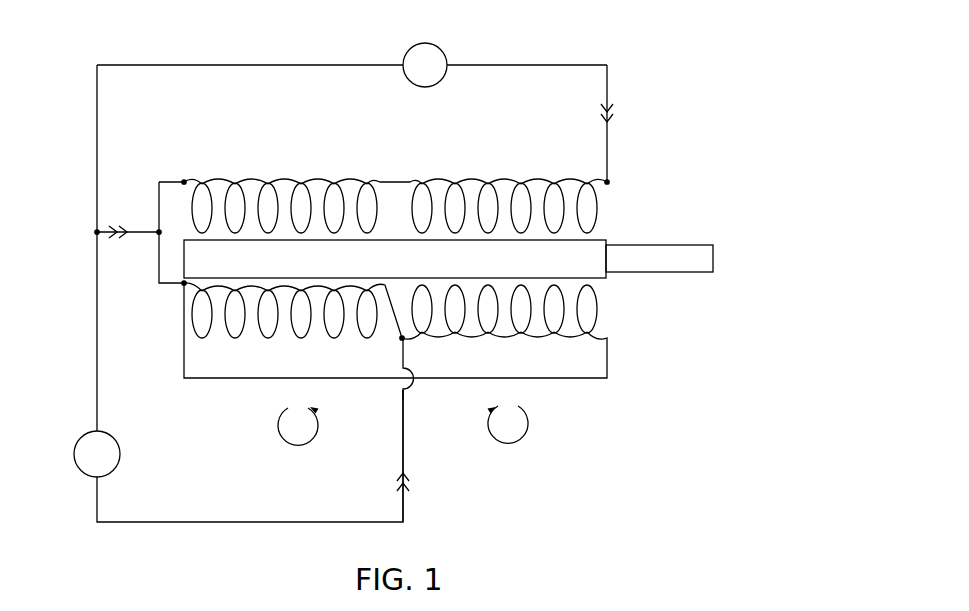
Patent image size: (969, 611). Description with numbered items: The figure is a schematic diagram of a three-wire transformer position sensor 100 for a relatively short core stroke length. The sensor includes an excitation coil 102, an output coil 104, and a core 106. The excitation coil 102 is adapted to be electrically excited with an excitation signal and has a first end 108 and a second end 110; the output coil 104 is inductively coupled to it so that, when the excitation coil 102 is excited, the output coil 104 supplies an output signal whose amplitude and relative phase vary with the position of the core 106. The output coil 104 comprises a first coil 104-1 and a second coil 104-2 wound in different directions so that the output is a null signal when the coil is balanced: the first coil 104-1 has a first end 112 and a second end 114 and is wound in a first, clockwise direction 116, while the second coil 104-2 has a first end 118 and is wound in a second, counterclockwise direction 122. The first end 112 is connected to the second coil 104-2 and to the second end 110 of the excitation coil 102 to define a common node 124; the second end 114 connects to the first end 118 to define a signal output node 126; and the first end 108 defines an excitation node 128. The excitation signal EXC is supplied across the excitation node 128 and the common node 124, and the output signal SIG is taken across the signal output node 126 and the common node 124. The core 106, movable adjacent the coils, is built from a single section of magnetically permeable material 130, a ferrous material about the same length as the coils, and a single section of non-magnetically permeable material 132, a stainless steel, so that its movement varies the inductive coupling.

The transformer position sensor 100 is at (728, 90).
The excitation coil 102 is at (383, 155).
The output coil 104 is at (456, 331).
The first coil 104-1 is at (470, 338).
The second coil 104-2 is at (302, 330).
The core 106 is at (714, 235).
The first end of excitation coil 108 is at (609, 182).
The second end of excitation coil 110 is at (192, 181).
The first end of first coil 112 is at (600, 333).
The second end of first coil 114 is at (407, 340).
The first direction 116 is at (190, 290).
The first end of second coil 118 is at (394, 331).
The second direction 122 is at (298, 445).
The common node 124 is at (140, 231).
The signal output node 126 is at (404, 408).
The excitation node 128 is at (607, 131).
The magnetically permeable material 130 is at (604, 240).
The non-magnetically permeable material 132 is at (684, 244).